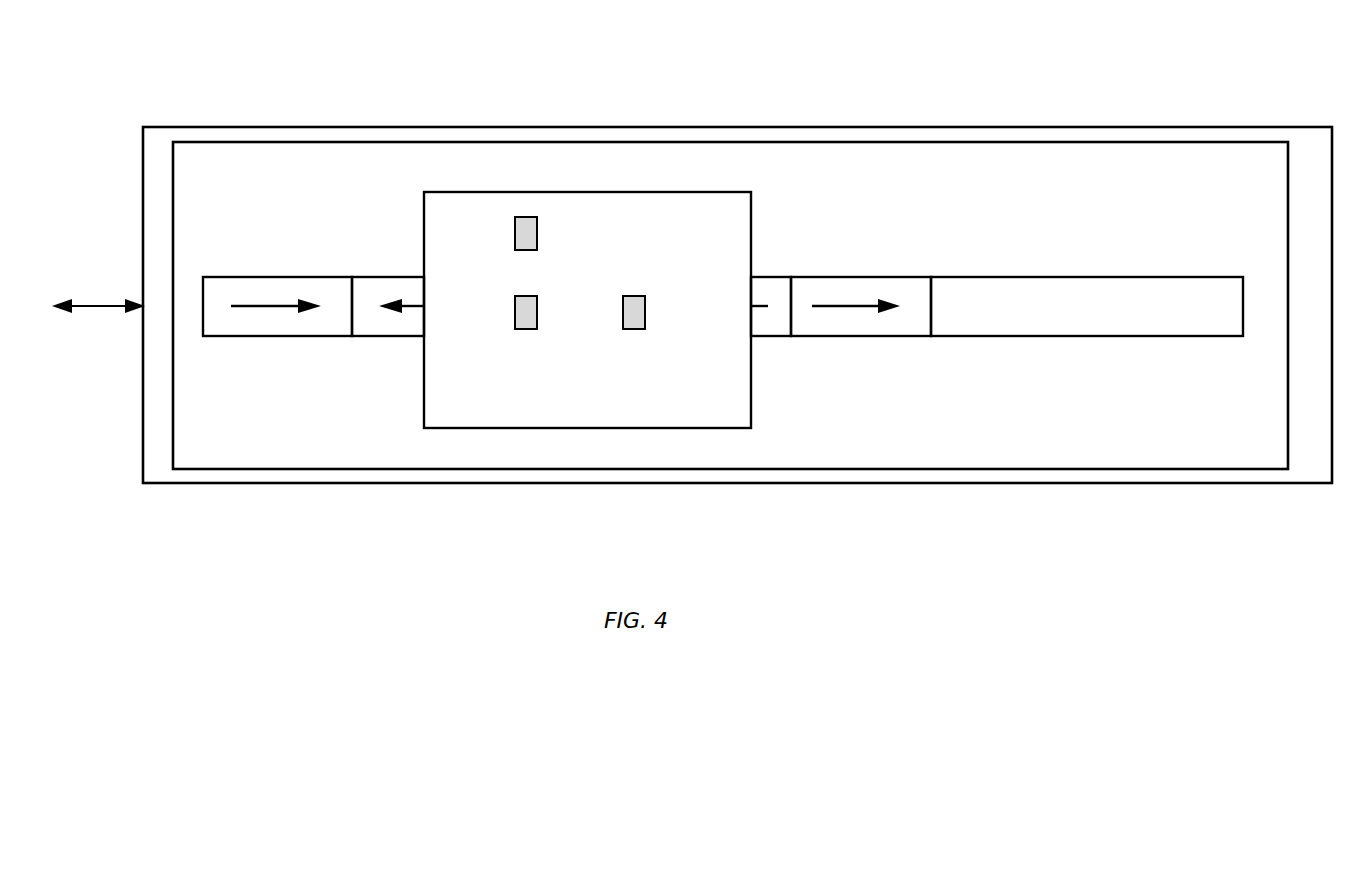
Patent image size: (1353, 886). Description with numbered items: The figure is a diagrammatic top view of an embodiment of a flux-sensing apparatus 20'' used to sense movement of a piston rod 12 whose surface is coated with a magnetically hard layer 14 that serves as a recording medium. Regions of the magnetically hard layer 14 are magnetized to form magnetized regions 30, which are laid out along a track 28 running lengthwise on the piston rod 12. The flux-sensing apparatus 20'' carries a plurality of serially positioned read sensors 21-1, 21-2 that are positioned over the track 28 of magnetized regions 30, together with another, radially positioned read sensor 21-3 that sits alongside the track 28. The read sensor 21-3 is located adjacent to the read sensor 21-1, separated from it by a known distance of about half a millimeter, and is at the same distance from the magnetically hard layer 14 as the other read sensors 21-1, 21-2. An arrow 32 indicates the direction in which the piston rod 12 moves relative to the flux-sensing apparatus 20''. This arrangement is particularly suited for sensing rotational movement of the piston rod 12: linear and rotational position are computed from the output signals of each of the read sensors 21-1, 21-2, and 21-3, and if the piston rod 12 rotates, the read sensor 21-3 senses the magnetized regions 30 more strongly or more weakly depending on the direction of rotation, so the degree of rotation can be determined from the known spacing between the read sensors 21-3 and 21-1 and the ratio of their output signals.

The piston rod 12 is at (1228, 127).
The magnetically hard layer 14 is at (730, 305).
The flux-sensing apparatus 20'' is at (635, 300).
The read sensor 21-1 is at (515, 329).
The read sensor 21-2 is at (623, 329).
The read sensor 21-3 is at (515, 216).
The track 28 is at (1057, 275).
The magnetized regions 30 is at (240, 275).
The arrow 32 is at (99, 303).